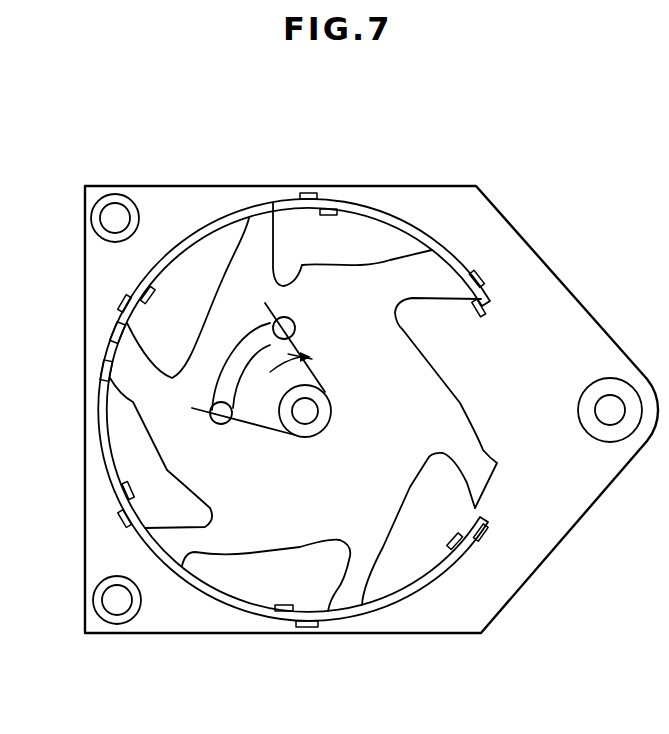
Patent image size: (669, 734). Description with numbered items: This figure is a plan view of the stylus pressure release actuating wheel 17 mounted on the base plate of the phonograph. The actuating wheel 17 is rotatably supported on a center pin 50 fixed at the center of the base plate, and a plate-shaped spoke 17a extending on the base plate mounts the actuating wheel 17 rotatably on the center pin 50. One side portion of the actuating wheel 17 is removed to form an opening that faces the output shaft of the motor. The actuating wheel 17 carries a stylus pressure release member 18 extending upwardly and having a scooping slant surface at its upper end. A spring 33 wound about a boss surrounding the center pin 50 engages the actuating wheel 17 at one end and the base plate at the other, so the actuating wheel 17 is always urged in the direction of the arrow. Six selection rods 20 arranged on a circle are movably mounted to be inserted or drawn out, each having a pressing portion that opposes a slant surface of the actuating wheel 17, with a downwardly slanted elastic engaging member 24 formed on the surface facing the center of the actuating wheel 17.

The stylus pressure release actuating wheel 17 is at (284, 207).
The spoke 17a is at (236, 533).
The stylus pressure release member 18 is at (104, 339).
The selection rod 20 is at (485, 534).
The elastic engaging member 24 is at (154, 288).
The spring 33 is at (243, 428).
The center pin 50 is at (310, 412).